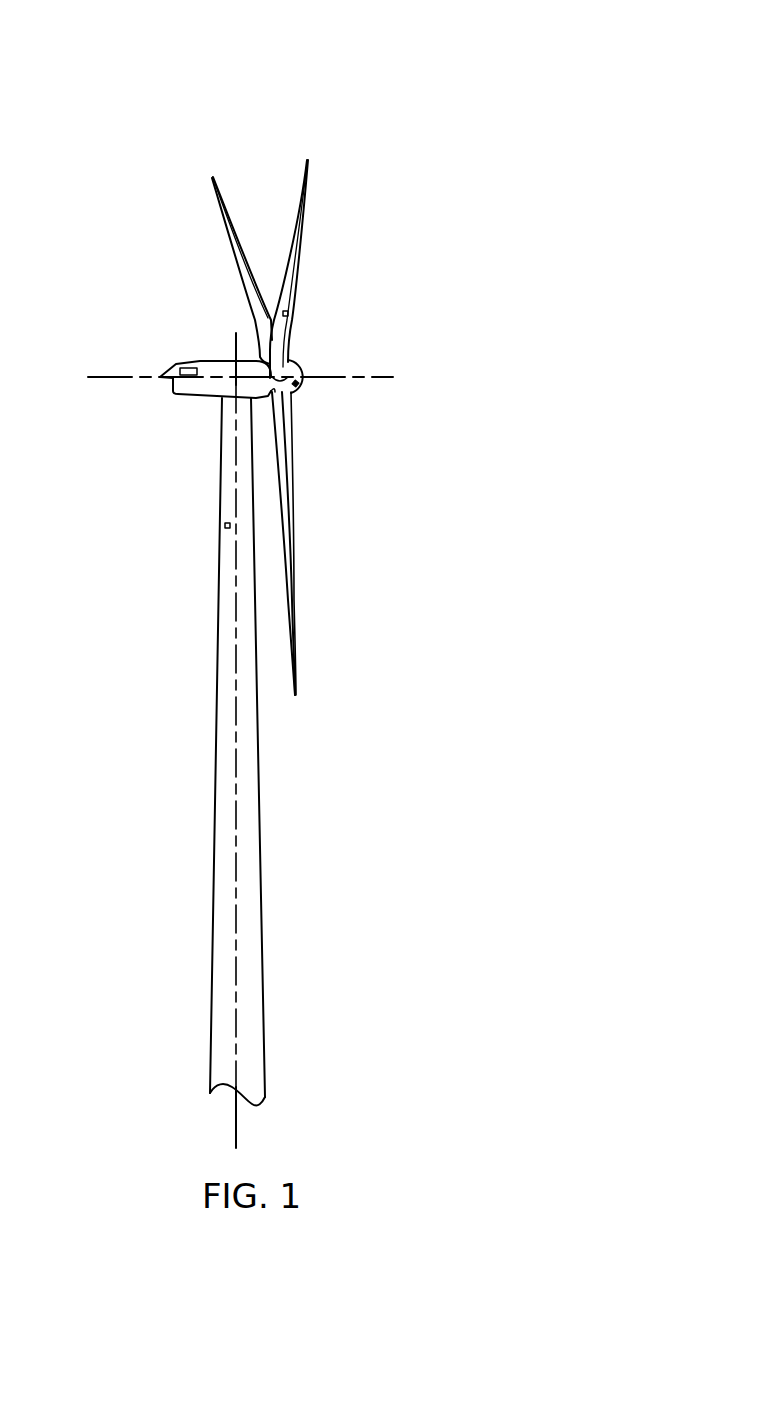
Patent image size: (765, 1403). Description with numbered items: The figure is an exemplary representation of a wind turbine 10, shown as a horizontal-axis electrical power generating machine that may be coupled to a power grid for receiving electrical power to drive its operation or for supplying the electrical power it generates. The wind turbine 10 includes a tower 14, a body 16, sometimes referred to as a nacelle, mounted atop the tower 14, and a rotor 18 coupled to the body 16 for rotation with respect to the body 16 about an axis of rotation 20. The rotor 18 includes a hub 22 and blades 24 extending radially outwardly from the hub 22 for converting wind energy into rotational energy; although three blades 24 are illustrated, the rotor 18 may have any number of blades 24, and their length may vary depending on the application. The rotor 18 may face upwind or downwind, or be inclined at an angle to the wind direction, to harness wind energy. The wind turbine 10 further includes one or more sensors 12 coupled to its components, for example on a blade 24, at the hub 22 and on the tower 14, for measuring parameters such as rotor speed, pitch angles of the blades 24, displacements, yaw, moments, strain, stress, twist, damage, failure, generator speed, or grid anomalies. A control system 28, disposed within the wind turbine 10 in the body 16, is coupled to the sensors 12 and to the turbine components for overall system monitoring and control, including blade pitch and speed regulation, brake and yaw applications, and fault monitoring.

The wind turbine 10 is at (460, 60).
The sensors 12 is at (285, 310).
The tower 14 is at (215, 851).
The body 16 is at (186, 395).
The rotor 18 is at (307, 420).
The axis of rotation 20 is at (367, 378).
The hub 22 is at (298, 369).
The blades 24 is at (228, 230).
The control system 28 is at (191, 366).